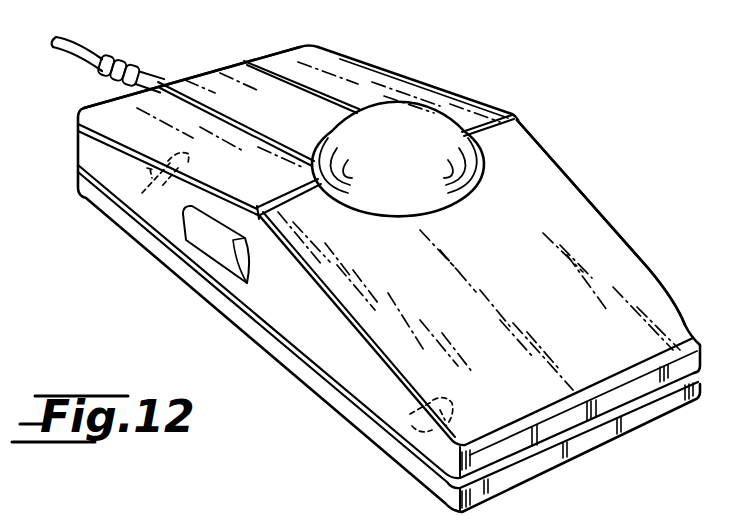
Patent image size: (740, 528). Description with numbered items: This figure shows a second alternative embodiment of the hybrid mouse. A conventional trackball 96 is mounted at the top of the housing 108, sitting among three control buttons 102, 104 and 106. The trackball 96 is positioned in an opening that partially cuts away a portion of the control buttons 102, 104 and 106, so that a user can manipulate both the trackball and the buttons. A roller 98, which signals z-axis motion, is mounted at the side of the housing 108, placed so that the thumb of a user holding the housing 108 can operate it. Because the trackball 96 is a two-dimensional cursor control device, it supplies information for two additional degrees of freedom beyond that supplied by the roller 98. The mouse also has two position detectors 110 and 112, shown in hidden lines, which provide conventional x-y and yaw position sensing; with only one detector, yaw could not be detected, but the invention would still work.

The trackball 96 is at (433, 192).
The roller 98 is at (220, 252).
The control button 102 is at (117, 112).
The control button 104 is at (242, 73).
The control button 106 is at (384, 80).
The housing 108 is at (572, 198).
The position detector 110 is at (137, 200).
The position detector 112 is at (397, 441).